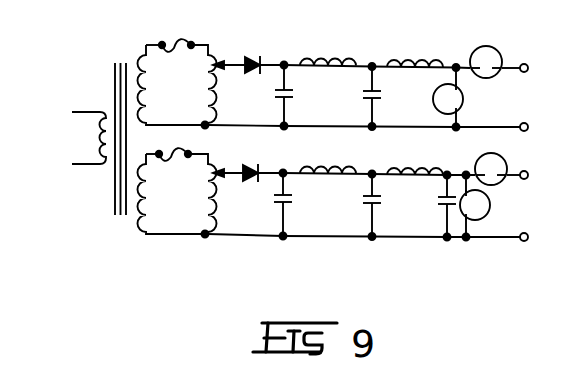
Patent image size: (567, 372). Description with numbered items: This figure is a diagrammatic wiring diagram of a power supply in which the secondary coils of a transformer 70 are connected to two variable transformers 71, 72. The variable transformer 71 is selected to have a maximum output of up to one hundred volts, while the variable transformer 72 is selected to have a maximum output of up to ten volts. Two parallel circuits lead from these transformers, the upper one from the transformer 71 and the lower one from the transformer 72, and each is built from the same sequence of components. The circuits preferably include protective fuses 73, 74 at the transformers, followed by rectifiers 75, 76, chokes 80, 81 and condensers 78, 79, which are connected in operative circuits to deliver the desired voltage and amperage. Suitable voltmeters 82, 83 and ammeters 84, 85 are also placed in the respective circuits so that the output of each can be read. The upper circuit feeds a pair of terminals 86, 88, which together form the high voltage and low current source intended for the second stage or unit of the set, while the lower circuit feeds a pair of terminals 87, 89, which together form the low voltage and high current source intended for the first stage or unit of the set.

The transformer 70 is at (102, 123).
The variable transformer 71 is at (177, 87).
The variable transformer 72 is at (177, 196).
The protective fuse 73 is at (176, 31).
The protective fuse 74 is at (167, 145).
The rectifier 75 is at (251, 53).
The rectifier 76 is at (250, 161).
The condenser 78 is at (341, 96).
The condenser 79 is at (350, 205).
The choke 80 is at (371, 48).
The choke 81 is at (371, 157).
The voltmeter 82 is at (462, 97).
The voltmeter 83 is at (488, 206).
The ammeter 84 is at (486, 50).
The ammeter 85 is at (491, 158).
The terminal 86 is at (538, 69).
The terminal 87 is at (538, 176).
The terminal 88 is at (538, 128).
The terminal 89 is at (538, 238).